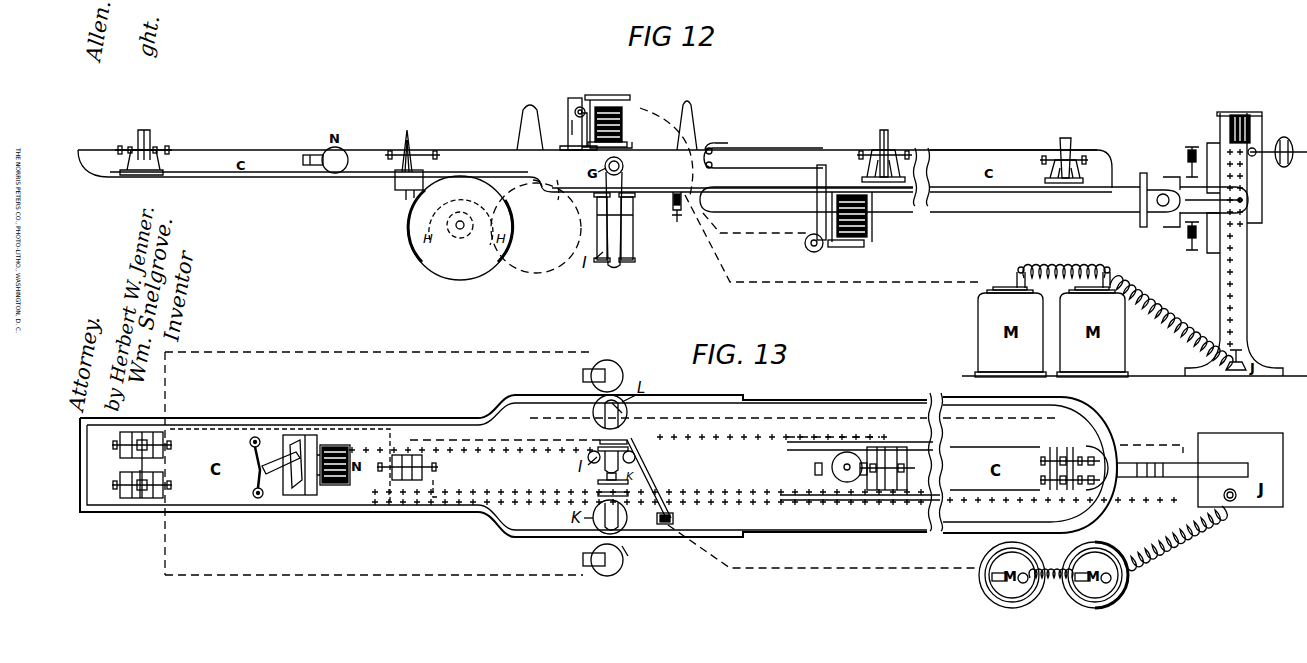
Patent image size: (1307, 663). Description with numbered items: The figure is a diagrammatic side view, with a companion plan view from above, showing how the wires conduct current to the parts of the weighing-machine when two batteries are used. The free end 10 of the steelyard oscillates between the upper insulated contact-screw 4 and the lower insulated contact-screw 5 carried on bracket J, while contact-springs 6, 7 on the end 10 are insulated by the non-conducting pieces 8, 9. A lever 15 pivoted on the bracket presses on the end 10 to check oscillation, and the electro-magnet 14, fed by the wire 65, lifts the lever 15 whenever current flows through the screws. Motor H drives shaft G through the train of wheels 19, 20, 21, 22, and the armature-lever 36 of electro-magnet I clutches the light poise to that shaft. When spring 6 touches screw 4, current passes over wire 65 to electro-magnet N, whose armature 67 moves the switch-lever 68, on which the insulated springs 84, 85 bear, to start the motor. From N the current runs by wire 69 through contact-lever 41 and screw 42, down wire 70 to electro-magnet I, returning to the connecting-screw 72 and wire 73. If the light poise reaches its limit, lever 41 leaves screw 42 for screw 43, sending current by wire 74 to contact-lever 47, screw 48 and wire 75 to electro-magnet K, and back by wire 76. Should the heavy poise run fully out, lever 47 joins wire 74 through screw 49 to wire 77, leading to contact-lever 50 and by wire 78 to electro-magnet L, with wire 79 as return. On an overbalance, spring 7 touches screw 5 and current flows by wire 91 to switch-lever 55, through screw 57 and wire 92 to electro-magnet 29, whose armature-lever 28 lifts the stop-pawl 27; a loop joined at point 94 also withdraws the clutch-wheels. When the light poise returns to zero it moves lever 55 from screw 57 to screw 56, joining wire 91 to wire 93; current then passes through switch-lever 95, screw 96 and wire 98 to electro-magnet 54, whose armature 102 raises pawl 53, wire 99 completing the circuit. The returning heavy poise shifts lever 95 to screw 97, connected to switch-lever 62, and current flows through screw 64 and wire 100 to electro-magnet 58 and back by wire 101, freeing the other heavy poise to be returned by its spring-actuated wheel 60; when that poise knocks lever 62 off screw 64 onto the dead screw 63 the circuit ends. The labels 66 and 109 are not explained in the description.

In FIG. 12, the upper insulated contact-screw 4 is at (1187, 158).
In FIG. 12, the lower insulated contact-screw 5 is at (1186, 245).
In FIG. 13, the contact-spring 6 is at (1185, 484).
In FIG. 13, the contact-spring 7 is at (1190, 464).
In FIG. 12, the non-conducting piece 8 is at (1214, 200).
In FIG. 12, the non-conducting piece 9 is at (1212, 209).
In FIG. 12, the free end of the steelyard 10 is at (1244, 202).
In FIG. 12, the electro-magnet 14 is at (1243, 114).
In FIG. 12, the lever 15 is at (1260, 130).
In FIG. 12, the wheel of gear train 19 is at (456, 223).
In FIG. 12, the wheel of gear train 20 is at (467, 215).
In FIG. 12, the wheel of gear train 21 is at (461, 222).
In FIG. 12, the wheel of gear train 22 is at (545, 177).
In FIG. 12, the stop-pawl 27 is at (726, 144).
In FIG. 12, the armature-lever 28 is at (818, 229).
In FIG. 13, the armature-lever 28 is at (809, 468).
In FIG. 12, the electro-magnet 29 is at (872, 228).
In FIG. 13, the electro-magnet 29 is at (849, 467).
In FIG. 12, the armature-lever 36 is at (626, 214).
In FIG. 12, the contact-lever 41 is at (883, 146).
In FIG. 13, the contact-lever 41 is at (887, 469).
In FIG. 12, the screw 42 is at (883, 144).
In FIG. 13, the screw 42 is at (885, 467).
In FIG. 12, the screw 43 is at (906, 150).
In FIG. 13, the screw 43 is at (907, 463).
In FIG. 13, the contact-lever 47 is at (1064, 513).
In FIG. 13, the screw 48 is at (1058, 468).
In FIG. 13, the screw 49 is at (1086, 469).
In FIG. 12, the contact-lever 50 is at (1066, 138).
In FIG. 13, the contact-lever 50 is at (1061, 456).
In FIG. 12, the pawl 53 is at (624, 103).
In FIG. 12, the electro-magnet 54 is at (624, 143).
In FIG. 13, the electro-magnet 54 is at (603, 376).
In FIG. 12, the switch-lever 55 is at (412, 142).
In FIG. 13, the switch-lever 55 is at (407, 475).
In FIG. 12, the screw 56 is at (402, 156).
In FIG. 13, the screw 56 is at (401, 465).
In FIG. 12, the screw 57 is at (445, 158).
In FIG. 13, the screw 57 is at (444, 466).
In FIG. 13, the electro-magnet 58 is at (603, 560).
In FIG. 13, the spring-actuated wheel 60 is at (560, 452).
In FIG. 13, the switch-lever 62 is at (141, 498).
In FIG. 13, the screw 63 is at (131, 485).
In FIG. 13, the screw 64 is at (179, 486).
In FIG. 12, the wire 65 is at (1175, 310).
In FIG. 13, the wire 65 is at (281, 463).
In FIG. 13, the conductor 66 is at (257, 472).
In FIG. 13, the armature 67 is at (310, 435).
In FIG. 13, the switch-lever 68 is at (536, 494).
In FIG. 13, the wire 69 is at (372, 443).
In FIG. 13, the wire 70 is at (648, 487).
In FIG. 12, the connecting-screw 72 is at (678, 222).
In FIG. 13, the connecting-screw 72 is at (674, 519).
In FIG. 12, the wire 73 is at (832, 239).
In FIG. 13, the wire 73 is at (823, 547).
In FIG. 13, the wire 74 is at (948, 499).
In FIG. 13, the wire 75 is at (807, 479).
In FIG. 13, the wire 76 is at (643, 520).
In FIG. 13, the wire 77 is at (1094, 469).
In FIG. 13, the wire 78 is at (795, 426).
In FIG. 13, the wire 79 is at (628, 443).
In FIG. 13, the insulated spring 84 is at (245, 448).
In FIG. 13, the insulated spring 85 is at (244, 494).
In FIG. 13, the wire 91 is at (796, 439).
In FIG. 13, the wire 92 is at (454, 488).
In FIG. 13, the wire 93 is at (206, 427).
In FIG. 13, the junction point 94 is at (700, 442).
In FIG. 12, the switch-lever 95 is at (150, 138).
In FIG. 13, the switch-lever 95 is at (141, 463).
In FIG. 12, the screw 96 is at (173, 145).
In FIG. 13, the screw 96 is at (179, 445).
In FIG. 12, the screw 97 is at (132, 145).
In FIG. 13, the screw 97 is at (118, 462).
In FIG. 13, the wire 98 is at (377, 459).
In FIG. 13, the wire 99 is at (598, 405).
In FIG. 13, the wire 100 is at (374, 573).
In FIG. 13, the wire 101 is at (638, 559).
In FIG. 12, the armature 102 is at (570, 127).
In FIG. 12, the pivot 109 is at (576, 110).